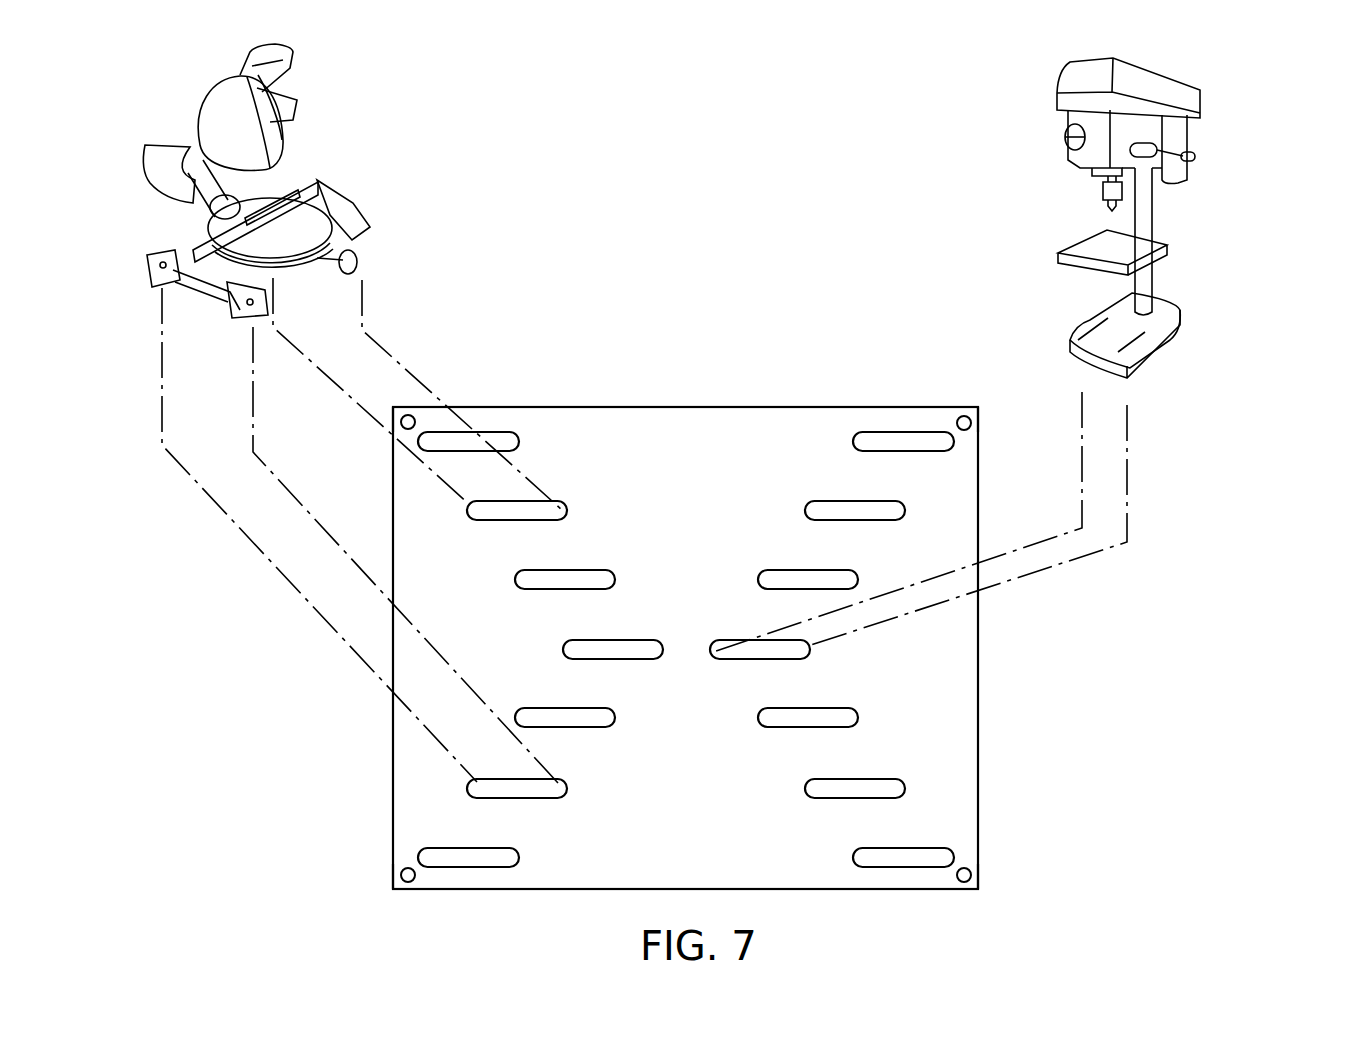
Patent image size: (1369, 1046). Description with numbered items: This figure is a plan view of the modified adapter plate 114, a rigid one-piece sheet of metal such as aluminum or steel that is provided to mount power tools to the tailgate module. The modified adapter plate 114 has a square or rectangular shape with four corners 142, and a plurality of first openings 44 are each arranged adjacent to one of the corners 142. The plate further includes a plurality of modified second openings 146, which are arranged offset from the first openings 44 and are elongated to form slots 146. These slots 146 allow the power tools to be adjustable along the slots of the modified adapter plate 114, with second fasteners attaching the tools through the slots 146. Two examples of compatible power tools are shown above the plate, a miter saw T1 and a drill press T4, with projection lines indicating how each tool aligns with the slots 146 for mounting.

The modified adapter plate 114 is at (740, 363).
The modified second openings 146 is at (490, 432).
The corners 142 is at (412, 416).
The first openings 44 is at (400, 428).
The miter saw T1 is at (145, 95).
The drill press T4 is at (1245, 148).